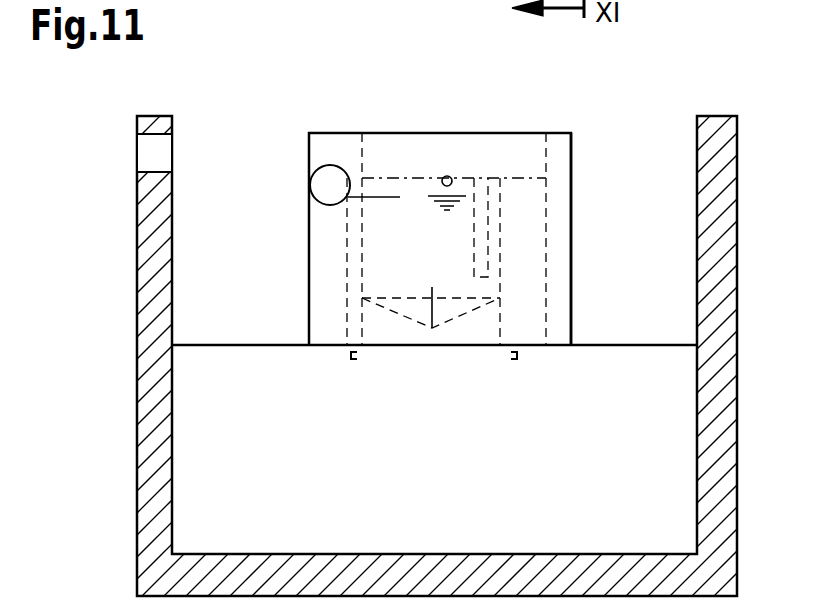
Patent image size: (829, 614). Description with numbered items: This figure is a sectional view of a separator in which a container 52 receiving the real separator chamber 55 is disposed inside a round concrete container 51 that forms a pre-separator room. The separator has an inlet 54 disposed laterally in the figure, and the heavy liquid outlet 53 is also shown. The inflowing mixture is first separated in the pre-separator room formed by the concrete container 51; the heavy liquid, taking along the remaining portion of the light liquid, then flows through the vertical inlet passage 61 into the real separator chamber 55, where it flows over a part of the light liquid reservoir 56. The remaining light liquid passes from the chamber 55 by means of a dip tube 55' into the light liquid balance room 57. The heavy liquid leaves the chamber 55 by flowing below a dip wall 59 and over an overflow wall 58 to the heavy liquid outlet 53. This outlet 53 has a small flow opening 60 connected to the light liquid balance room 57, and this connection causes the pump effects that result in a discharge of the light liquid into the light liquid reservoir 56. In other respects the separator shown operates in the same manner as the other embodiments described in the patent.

The round concrete container 51 is at (724, 238).
The container 52 is at (571, 290).
The heavy liquid outlet 53 is at (322, 181).
The inlet 54 is at (148, 152).
The real separator chamber 55 is at (431, 252).
The dip tube 55' is at (517, 171).
The light liquid reservoir 56 is at (530, 228).
The light liquid balance room 57 is at (327, 316).
The overflow wall 58 is at (347, 265).
The dip wall 59 is at (362, 245).
The small flow opening 60 is at (337, 190).
The vertical inlet passage 61 is at (560, 333).